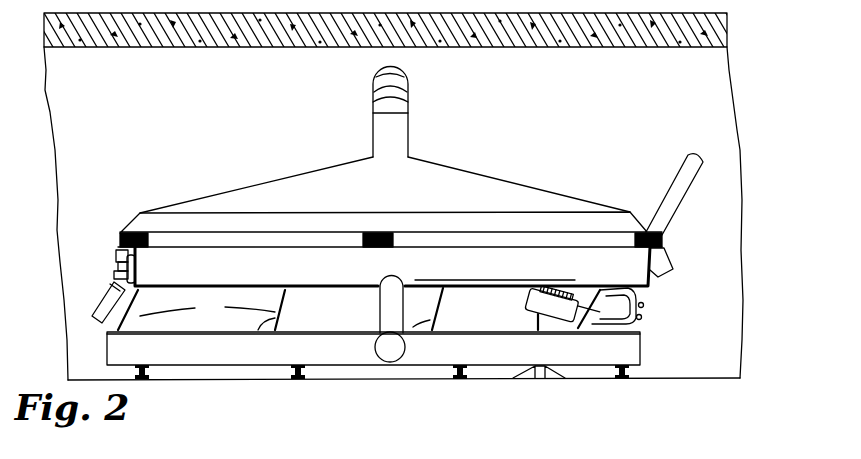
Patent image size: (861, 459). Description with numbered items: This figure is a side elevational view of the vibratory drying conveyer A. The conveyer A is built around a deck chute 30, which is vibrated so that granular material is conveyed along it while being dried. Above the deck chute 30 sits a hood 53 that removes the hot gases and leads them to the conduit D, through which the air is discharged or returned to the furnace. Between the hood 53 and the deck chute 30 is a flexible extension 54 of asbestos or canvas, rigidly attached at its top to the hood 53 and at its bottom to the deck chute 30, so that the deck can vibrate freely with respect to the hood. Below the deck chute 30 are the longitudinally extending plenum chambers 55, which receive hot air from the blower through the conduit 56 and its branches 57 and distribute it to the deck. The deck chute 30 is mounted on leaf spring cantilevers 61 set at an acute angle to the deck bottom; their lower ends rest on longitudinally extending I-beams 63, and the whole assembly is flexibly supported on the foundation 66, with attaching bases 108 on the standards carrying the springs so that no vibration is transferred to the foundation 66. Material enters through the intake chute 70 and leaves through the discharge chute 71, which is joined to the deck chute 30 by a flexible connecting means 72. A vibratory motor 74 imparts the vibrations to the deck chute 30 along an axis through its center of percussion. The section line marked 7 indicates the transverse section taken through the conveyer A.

The hood 53 is at (318, 185).
The flexible extension 54 is at (120, 237).
The deck chute 30 is at (118, 258).
The flexible connecting means 72 is at (116, 285).
The chute 71 is at (112, 307).
The leaf spring cantilevers 61 is at (207, 309).
The branches 57 is at (385, 317).
The plenum chambers 55 is at (480, 268).
The conduit 56 is at (402, 351).
The I-beams 63 is at (258, 350).
The attaching bases 108 is at (533, 368).
The foundation 66 is at (680, 376).
The vibratory motor 74 is at (646, 313).
The intake chute 70 is at (670, 203).
The section line 7- 7 is at (318, 300).
The conduit D is at (398, 128).
The vibratory drying conveyer A is at (527, 182).